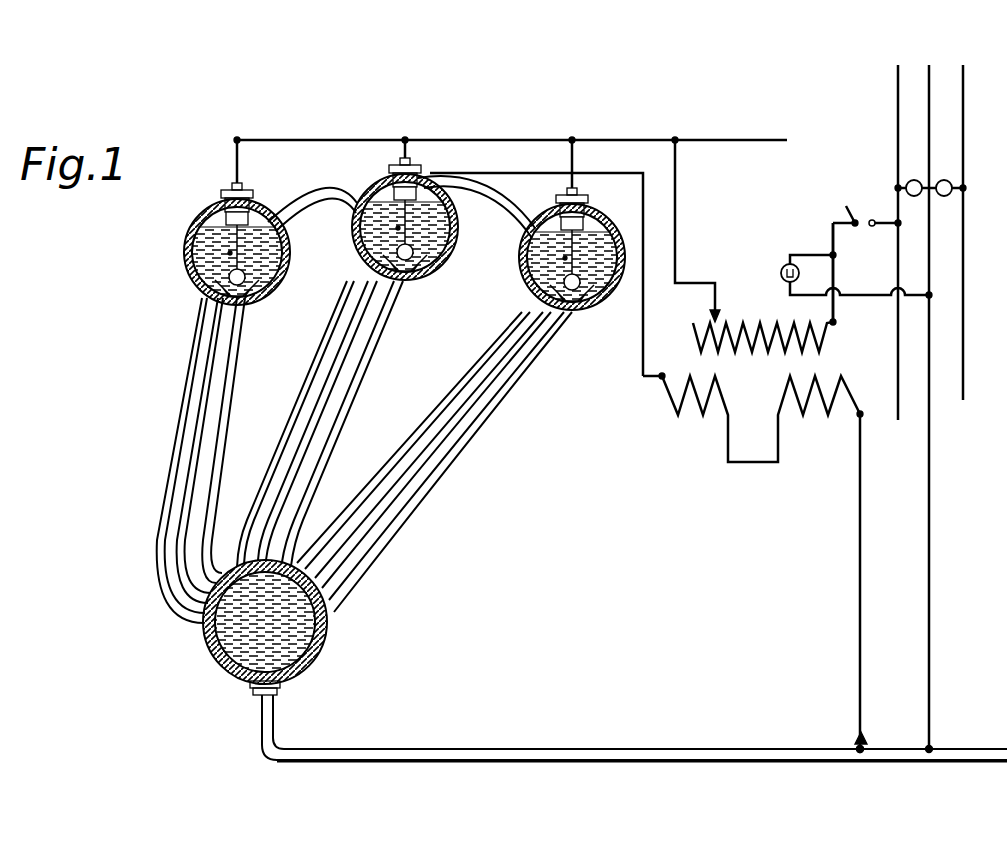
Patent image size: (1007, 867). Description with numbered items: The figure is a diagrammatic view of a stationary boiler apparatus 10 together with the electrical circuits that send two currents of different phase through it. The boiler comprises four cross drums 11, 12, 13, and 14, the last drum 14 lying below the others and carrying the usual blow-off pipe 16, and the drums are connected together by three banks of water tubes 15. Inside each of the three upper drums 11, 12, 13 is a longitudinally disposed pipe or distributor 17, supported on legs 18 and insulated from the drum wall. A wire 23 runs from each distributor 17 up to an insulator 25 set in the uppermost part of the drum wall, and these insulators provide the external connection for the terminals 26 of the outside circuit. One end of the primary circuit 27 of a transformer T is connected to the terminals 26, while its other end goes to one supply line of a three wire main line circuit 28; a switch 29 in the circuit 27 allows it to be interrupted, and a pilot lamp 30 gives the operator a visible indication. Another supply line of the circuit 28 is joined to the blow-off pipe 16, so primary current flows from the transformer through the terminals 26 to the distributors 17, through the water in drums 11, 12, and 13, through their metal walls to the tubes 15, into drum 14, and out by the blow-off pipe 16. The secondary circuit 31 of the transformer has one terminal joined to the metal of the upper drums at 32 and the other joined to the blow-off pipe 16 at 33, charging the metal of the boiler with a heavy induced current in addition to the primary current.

The apparatus 10 is at (180, 298).
The cross drum 11 is at (185, 236).
The cross drum 12 is at (362, 241).
The cross drum 13 is at (522, 262).
The cross drum 14 is at (212, 655).
The water tubes 15 is at (197, 447).
The blow-off pipe 16 is at (518, 747).
The distributor 17 is at (278, 292).
The legs 18 is at (205, 304).
The wire 23 is at (182, 257).
The insulator 25 is at (222, 192).
The terminals 26 is at (230, 165).
The primary circuit 27 is at (687, 277).
The main line circuit 28 is at (960, 148).
The switch 29 is at (850, 210).
The pilot lamp 30 is at (781, 272).
The secondary circuit 31 is at (683, 416).
The secondary circuit connection to drums 32 is at (447, 181).
The secondary circuit connection to blow-off pipe 33 is at (852, 738).